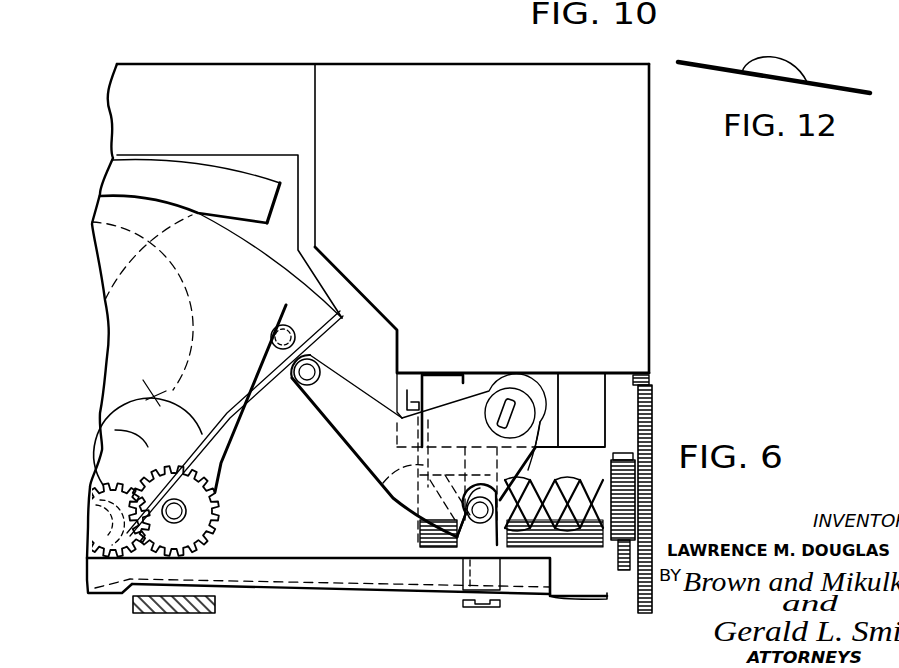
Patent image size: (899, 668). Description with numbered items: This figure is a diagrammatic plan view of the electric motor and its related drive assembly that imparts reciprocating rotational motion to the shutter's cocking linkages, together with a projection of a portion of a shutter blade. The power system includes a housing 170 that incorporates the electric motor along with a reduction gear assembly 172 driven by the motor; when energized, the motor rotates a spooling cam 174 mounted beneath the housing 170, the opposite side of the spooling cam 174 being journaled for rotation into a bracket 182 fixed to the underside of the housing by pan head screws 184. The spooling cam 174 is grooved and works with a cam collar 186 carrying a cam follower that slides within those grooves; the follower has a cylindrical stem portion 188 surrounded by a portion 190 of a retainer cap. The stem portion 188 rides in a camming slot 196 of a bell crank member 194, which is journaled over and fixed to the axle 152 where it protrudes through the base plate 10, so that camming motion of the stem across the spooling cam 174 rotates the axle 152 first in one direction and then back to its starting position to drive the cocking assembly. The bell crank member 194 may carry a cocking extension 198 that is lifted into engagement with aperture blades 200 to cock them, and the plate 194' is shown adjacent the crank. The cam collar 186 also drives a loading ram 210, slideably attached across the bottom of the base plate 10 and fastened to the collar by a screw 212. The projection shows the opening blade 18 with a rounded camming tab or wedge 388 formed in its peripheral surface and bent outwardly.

In FIG. 6, the base plate 10 is at (256, 60).
In FIG. 12, the opening blade 18 is at (830, 88).
In FIG. 6, the axle 152 is at (516, 395).
In FIG. 6, the housing 170 is at (652, 196).
In FIG. 6, the reduction gear assembly 172 is at (658, 381).
In FIG. 6, the spooling cam 174 is at (580, 545).
In FIG. 6, the bracket 182 is at (385, 490).
In FIG. 6, the pan head screws 184 is at (408, 392).
In FIG. 6, the cam collar 186 is at (498, 548).
In FIG. 6, the cylindrical stem portion 188 is at (478, 527).
In FIG. 6, the retainer cap portion 190 is at (476, 522).
In FIG. 6, the bell crank member 194 is at (380, 449).
In FIG. 6, the follower plate 194' is at (471, 414).
In FIG. 6, the camming slot 196 is at (528, 472).
In FIG. 6, the cocking extension 198 is at (333, 375).
In FIG. 6, the aperture blades 200 is at (238, 266).
In FIG. 6, the loading ram 210 is at (288, 566).
In FIG. 6, the screw 212 is at (470, 608).
In FIG. 12, the camming tab or wedge 388 is at (778, 62).